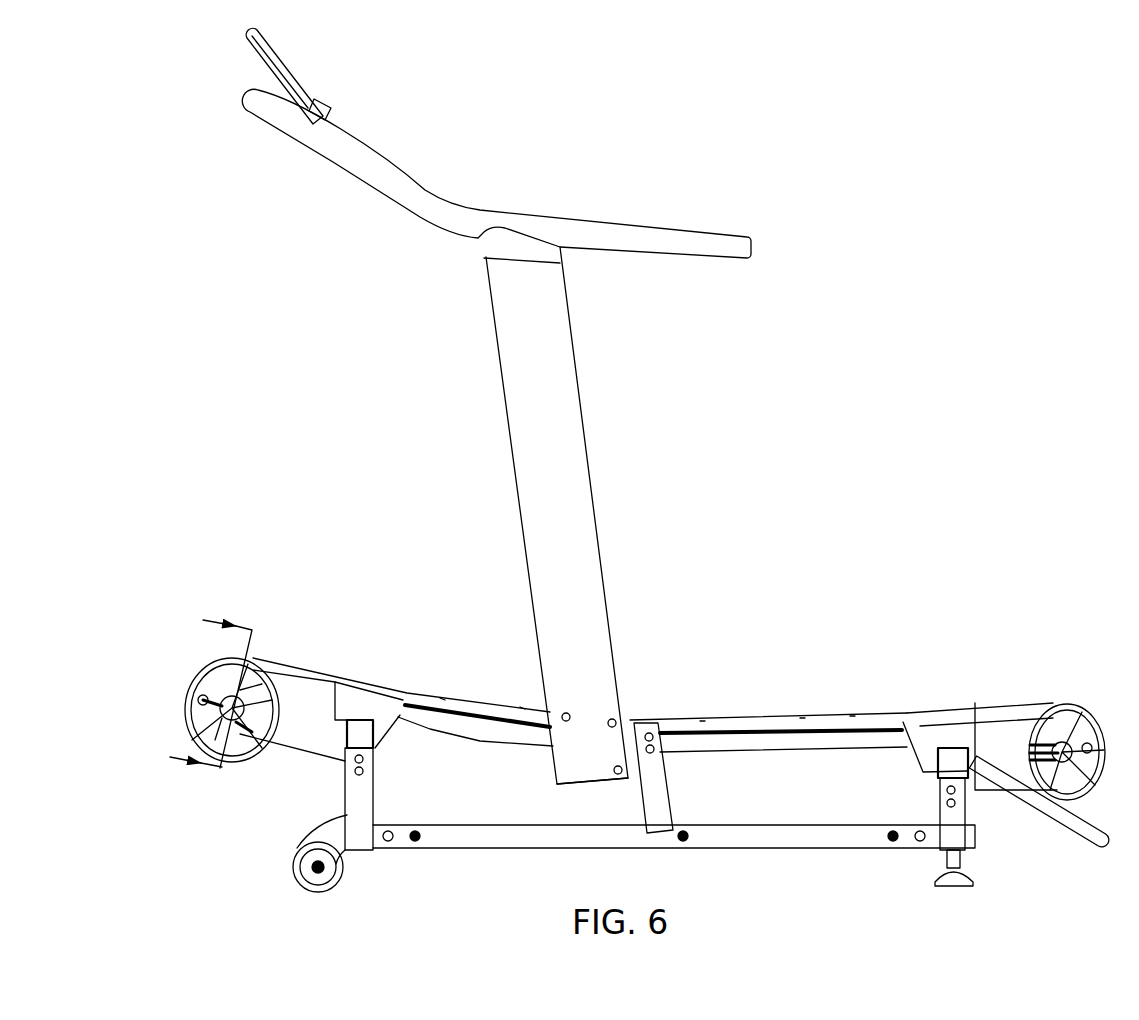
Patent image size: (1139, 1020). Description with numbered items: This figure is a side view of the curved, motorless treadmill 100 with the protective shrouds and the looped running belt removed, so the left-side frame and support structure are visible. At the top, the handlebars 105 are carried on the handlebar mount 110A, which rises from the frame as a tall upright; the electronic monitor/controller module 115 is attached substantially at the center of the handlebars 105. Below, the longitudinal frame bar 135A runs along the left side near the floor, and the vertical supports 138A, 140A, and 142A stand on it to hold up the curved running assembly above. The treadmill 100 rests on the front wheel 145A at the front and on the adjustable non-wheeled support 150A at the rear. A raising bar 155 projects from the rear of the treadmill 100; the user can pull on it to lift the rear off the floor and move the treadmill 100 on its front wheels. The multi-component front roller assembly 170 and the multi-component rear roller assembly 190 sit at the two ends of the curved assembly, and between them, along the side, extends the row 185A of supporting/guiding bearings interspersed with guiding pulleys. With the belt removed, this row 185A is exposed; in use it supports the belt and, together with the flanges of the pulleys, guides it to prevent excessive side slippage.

The curved treadmill 100 is at (585, 458).
The handlebars 105 is at (567, 231).
The handlebar mount 110A is at (546, 414).
The electronic monitor/controller module 115 is at (272, 60).
The longitudinal frame bar 135A is at (578, 836).
The vertical support 138A is at (374, 798).
The vertical support 140A is at (668, 797).
The vertical support 142A is at (937, 798).
The front wheel 145A is at (294, 867).
The adjustable non-wheeled support 150A is at (938, 886).
The raising bar 155 is at (1084, 843).
The front roller assembly 170 is at (184, 694).
The row of supporting/guiding bearings 185A is at (683, 721).
The rear roller assembly 190 is at (1074, 704).